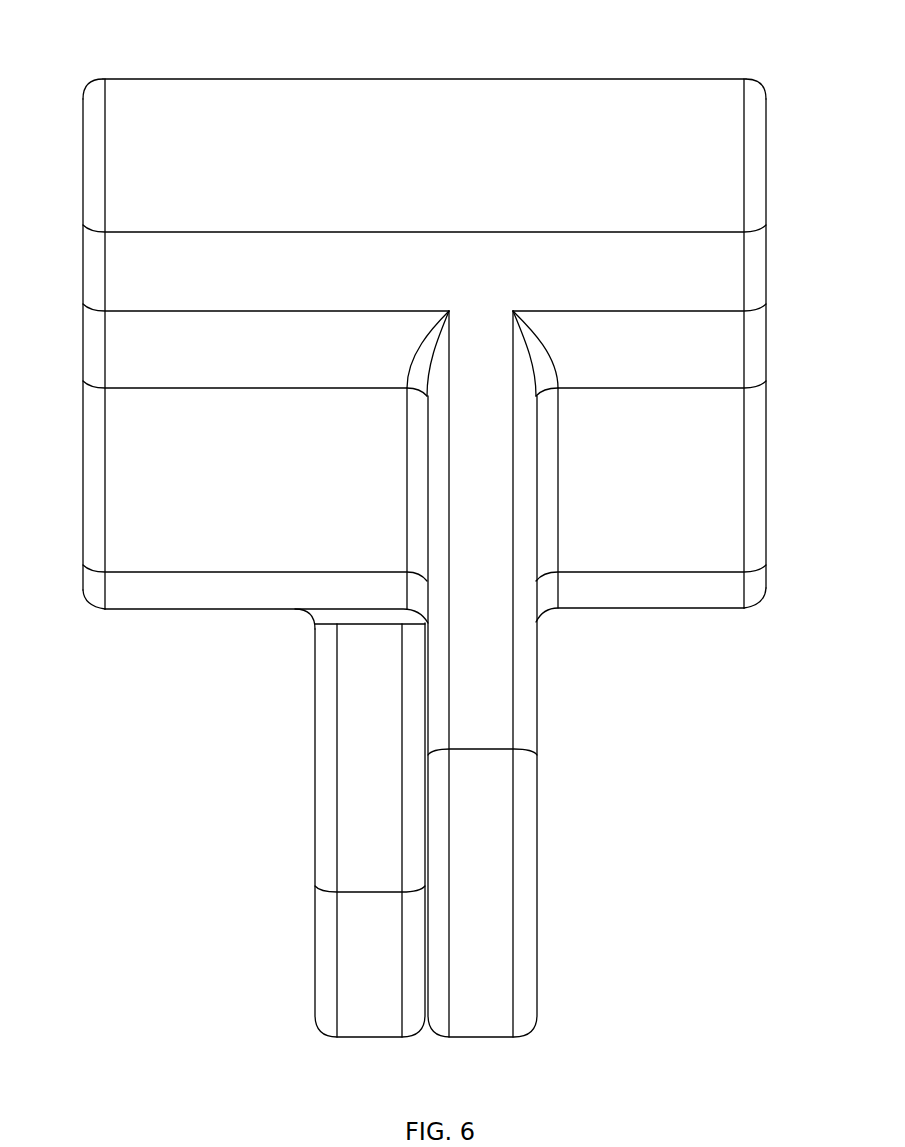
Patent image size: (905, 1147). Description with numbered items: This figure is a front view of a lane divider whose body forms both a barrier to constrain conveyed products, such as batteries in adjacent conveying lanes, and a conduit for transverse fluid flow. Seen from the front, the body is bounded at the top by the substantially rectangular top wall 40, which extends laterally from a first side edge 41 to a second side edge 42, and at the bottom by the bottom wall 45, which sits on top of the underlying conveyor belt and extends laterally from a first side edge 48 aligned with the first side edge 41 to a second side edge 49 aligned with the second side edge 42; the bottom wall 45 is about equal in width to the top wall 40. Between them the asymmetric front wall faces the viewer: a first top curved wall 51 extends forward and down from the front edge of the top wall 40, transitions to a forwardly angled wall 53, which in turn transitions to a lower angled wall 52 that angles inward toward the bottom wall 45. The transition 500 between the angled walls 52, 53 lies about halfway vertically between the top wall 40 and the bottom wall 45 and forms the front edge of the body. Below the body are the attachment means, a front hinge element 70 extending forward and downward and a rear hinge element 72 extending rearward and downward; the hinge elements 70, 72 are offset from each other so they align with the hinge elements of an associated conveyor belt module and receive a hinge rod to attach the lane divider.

The top wall 40 is at (582, 78).
The first side edge 41 is at (762, 86).
The second side edge 42 is at (83, 96).
The bottom wall 45 is at (667, 592).
The first side edge 48 is at (767, 587).
The second side edge 49 is at (83, 590).
The first top curved wall 51 is at (608, 151).
The lower angled wall 52 is at (228, 474).
The forwardly angled wall 53 is at (424, 282).
The transition 500 is at (641, 353).
The front hinge element 70 is at (355, 908).
The rear hinge element 72 is at (495, 940).